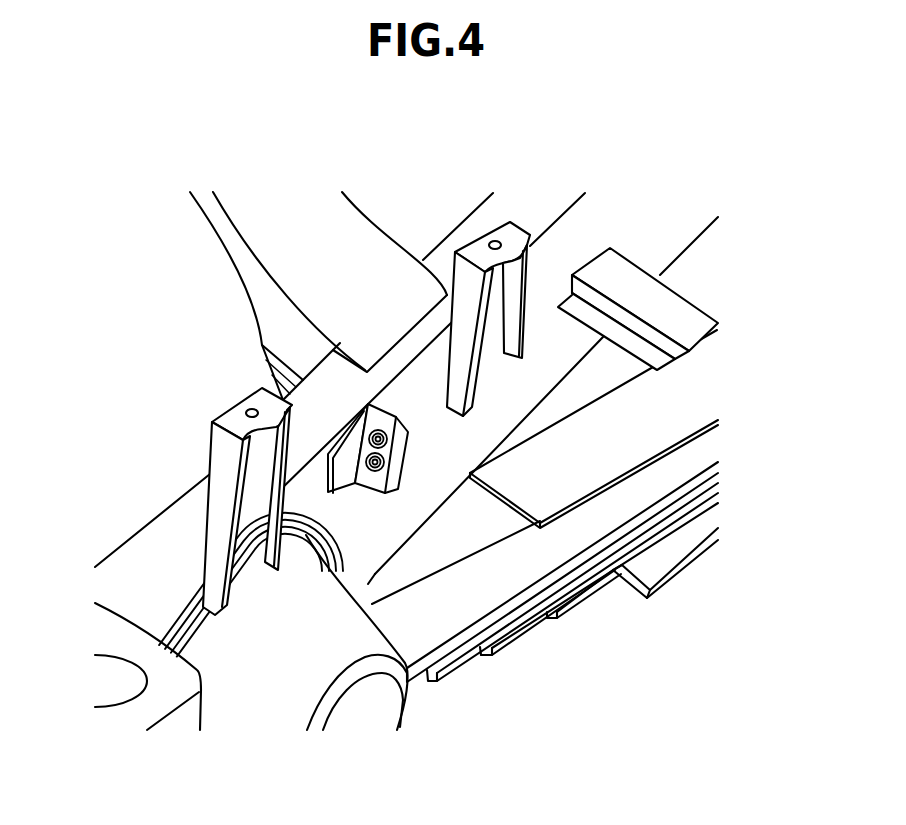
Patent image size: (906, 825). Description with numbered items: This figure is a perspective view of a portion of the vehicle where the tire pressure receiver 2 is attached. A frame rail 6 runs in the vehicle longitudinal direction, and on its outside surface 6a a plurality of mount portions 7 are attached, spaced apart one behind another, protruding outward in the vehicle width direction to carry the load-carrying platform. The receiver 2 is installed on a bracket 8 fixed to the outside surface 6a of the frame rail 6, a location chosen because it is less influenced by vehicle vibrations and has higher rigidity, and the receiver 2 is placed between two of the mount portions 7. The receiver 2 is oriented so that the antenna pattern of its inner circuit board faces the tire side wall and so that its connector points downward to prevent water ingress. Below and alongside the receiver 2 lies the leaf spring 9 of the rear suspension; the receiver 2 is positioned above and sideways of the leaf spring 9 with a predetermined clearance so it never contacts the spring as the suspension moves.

The receiver 2 is at (407, 470).
The frame rail 6 is at (145, 543).
The outside surface 6a is at (540, 357).
The mount portion 7 is at (242, 408).
The bracket 8 is at (370, 480).
The leaf spring 9 is at (667, 406).